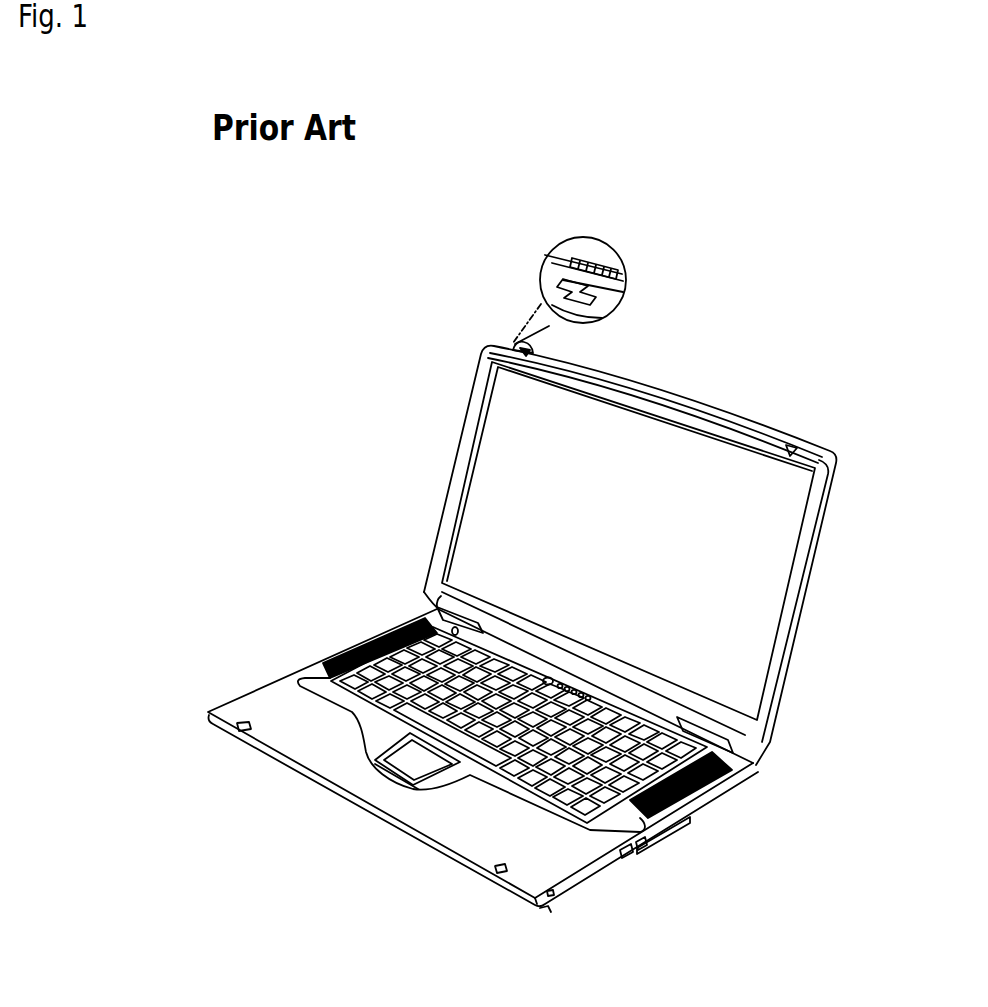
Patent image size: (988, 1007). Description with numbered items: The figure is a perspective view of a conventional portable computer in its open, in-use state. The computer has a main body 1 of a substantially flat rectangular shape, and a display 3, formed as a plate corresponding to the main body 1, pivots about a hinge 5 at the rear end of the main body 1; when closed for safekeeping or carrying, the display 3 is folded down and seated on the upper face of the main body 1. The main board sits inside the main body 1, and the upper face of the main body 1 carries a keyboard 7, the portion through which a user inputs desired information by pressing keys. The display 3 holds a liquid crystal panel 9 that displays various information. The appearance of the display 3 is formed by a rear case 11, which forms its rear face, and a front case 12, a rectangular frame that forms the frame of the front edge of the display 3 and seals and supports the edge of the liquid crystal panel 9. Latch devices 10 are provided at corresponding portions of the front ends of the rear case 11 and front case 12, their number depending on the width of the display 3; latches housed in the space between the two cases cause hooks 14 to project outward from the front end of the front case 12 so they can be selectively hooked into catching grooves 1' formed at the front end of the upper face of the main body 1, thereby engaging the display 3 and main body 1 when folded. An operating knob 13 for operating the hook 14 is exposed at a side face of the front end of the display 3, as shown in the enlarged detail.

The main body 1 is at (483, 760).
The catching grooves 1' is at (372, 837).
The display 3 is at (812, 573).
The hinge 5 is at (426, 595).
The keyboard 7 is at (627, 790).
The liquid crystal panel 9 is at (492, 470).
The latch devices 10 is at (537, 350).
The rear case 11 is at (565, 247).
The front case 12 is at (546, 262).
The operating knob 13 is at (606, 264).
The hooks 14 is at (543, 297).